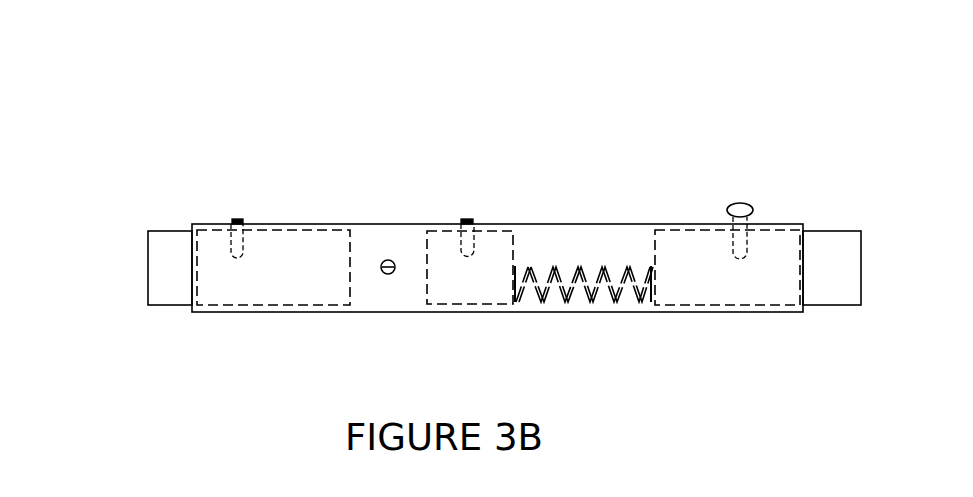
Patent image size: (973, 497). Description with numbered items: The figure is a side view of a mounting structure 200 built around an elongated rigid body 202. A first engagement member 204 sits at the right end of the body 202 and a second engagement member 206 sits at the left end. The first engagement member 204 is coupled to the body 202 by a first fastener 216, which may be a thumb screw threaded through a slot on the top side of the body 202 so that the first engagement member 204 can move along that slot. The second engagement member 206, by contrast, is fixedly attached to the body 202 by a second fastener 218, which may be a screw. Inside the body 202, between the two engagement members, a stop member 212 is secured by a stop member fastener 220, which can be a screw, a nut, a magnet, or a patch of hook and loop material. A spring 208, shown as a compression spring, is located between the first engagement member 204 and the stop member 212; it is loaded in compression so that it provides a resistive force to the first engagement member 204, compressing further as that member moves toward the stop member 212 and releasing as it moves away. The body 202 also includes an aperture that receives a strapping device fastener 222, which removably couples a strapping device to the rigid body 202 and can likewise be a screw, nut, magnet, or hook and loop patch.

The mounting structure 200 is at (133, 73).
The body 202 is at (382, 313).
The first engagement member 204 is at (845, 230).
The second engagement member 206 is at (168, 230).
The spring 208 is at (587, 287).
The stop member 212 is at (505, 230).
The first fastener 216 is at (748, 198).
The second fastener 218 is at (235, 222).
The stop member fastener 220 is at (469, 219).
The strapping device fastener 222 is at (387, 260).